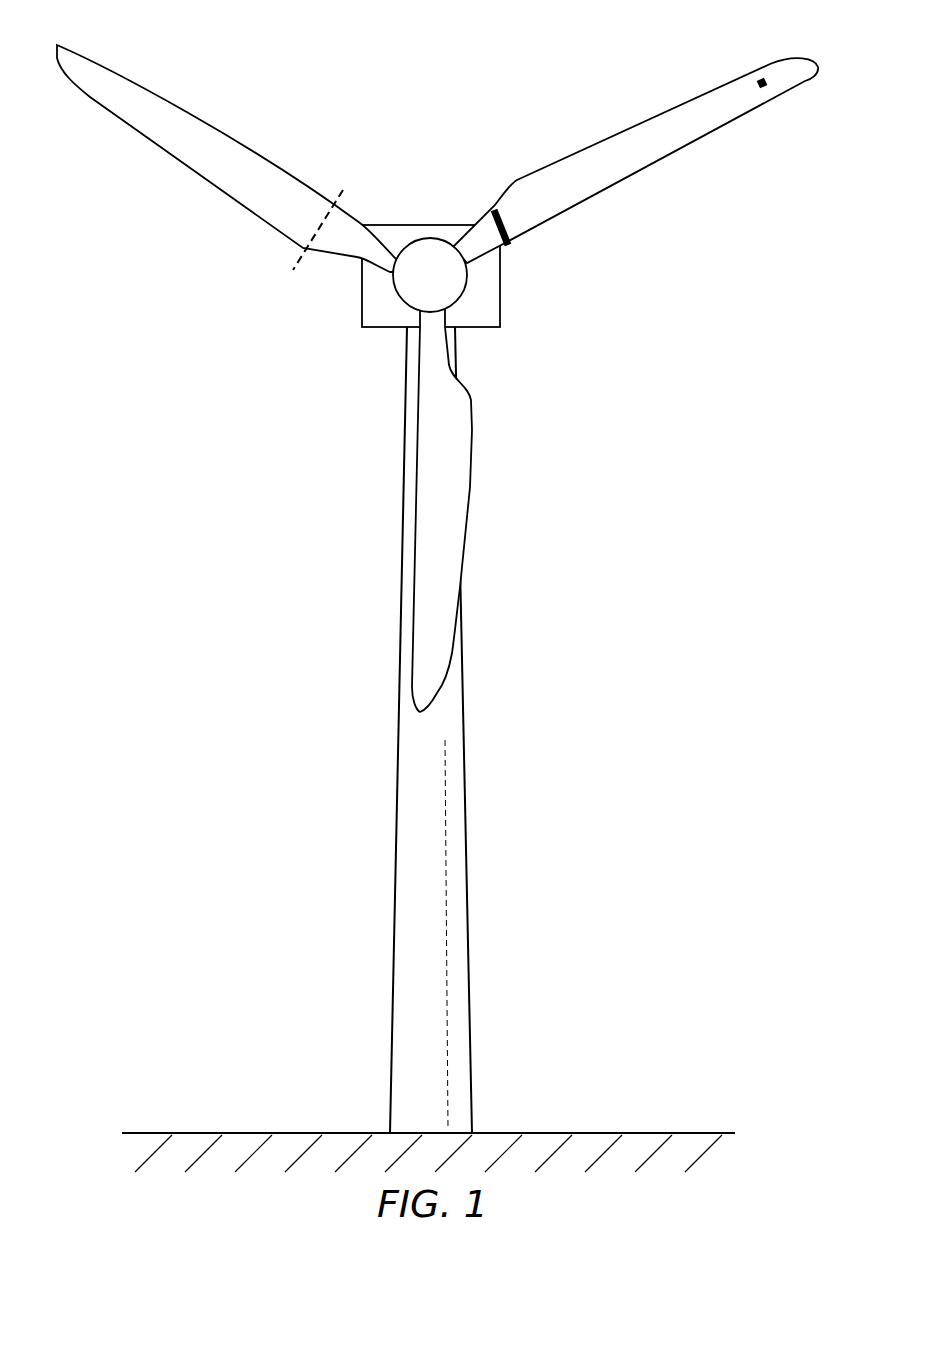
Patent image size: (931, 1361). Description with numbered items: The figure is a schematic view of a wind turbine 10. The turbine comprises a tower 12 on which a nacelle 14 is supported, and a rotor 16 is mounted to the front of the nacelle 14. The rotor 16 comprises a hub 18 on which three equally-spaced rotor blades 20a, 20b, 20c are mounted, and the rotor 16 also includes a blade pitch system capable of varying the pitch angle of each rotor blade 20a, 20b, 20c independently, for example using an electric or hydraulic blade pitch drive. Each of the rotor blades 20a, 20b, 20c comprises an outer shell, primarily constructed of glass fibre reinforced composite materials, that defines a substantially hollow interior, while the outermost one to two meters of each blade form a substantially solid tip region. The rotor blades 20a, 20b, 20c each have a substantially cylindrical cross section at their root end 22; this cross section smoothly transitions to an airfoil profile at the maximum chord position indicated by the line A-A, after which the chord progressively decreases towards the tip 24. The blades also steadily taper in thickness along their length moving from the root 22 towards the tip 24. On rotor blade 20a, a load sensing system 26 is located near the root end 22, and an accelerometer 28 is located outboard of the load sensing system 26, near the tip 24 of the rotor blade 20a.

The wind turbine 10 is at (436, 600).
The tower 12 is at (467, 985).
The nacelle 14 is at (498, 318).
The rotor 16 is at (437, 370).
The hub 18 is at (406, 301).
The rotor blade 20a is at (646, 169).
The rotor blade 20b is at (470, 430).
The rotor blade 20c is at (173, 161).
The root end 22 is at (462, 203).
The tip 24 is at (132, 57).
The load sensing system 26 is at (507, 247).
The accelerometer 28 is at (756, 77).